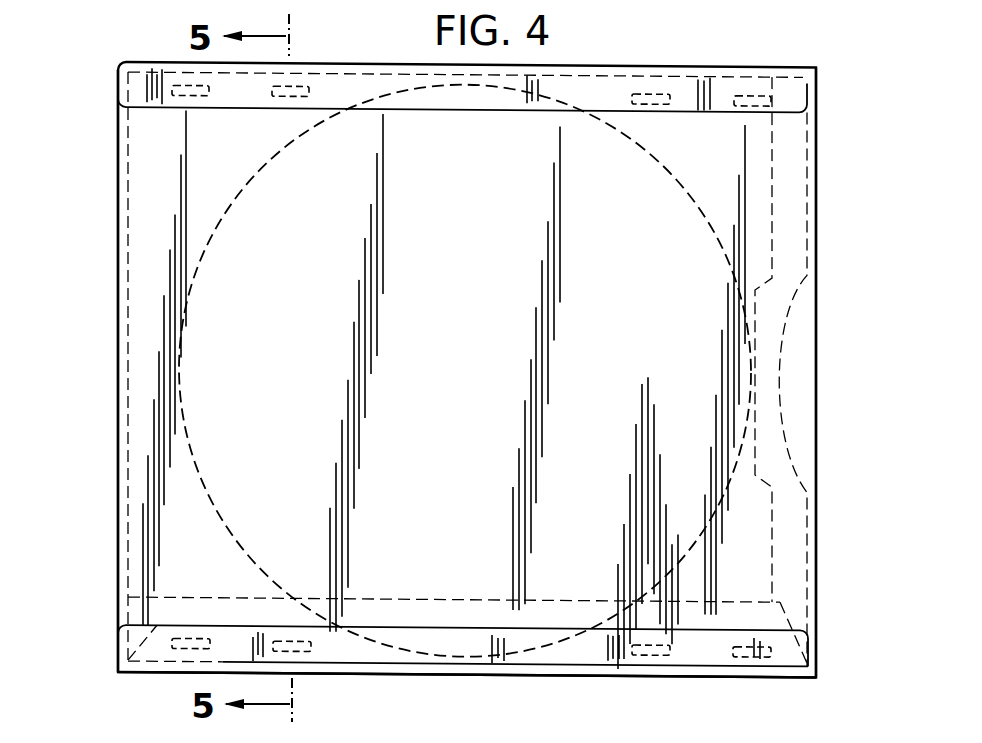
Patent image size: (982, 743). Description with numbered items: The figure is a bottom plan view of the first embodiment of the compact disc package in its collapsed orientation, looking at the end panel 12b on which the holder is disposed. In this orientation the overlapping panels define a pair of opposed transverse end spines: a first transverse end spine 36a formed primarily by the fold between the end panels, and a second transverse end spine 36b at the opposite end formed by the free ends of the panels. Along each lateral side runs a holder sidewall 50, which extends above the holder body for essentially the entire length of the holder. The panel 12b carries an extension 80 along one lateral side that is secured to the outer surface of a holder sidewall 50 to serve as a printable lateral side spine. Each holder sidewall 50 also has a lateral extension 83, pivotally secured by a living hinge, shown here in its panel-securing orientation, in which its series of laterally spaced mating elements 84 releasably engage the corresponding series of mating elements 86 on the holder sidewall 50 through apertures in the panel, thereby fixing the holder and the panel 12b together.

The end panel 12b is at (466, 354).
The first transverse end spine 36a is at (118, 376).
The second transverse end spine 36b is at (816, 382).
The holder sidewall 50 is at (784, 72).
The extension 80 is at (533, 677).
The lateral extension 83 is at (600, 90).
The mating elements 84 is at (665, 95).
The mating elements 86 is at (165, 648).